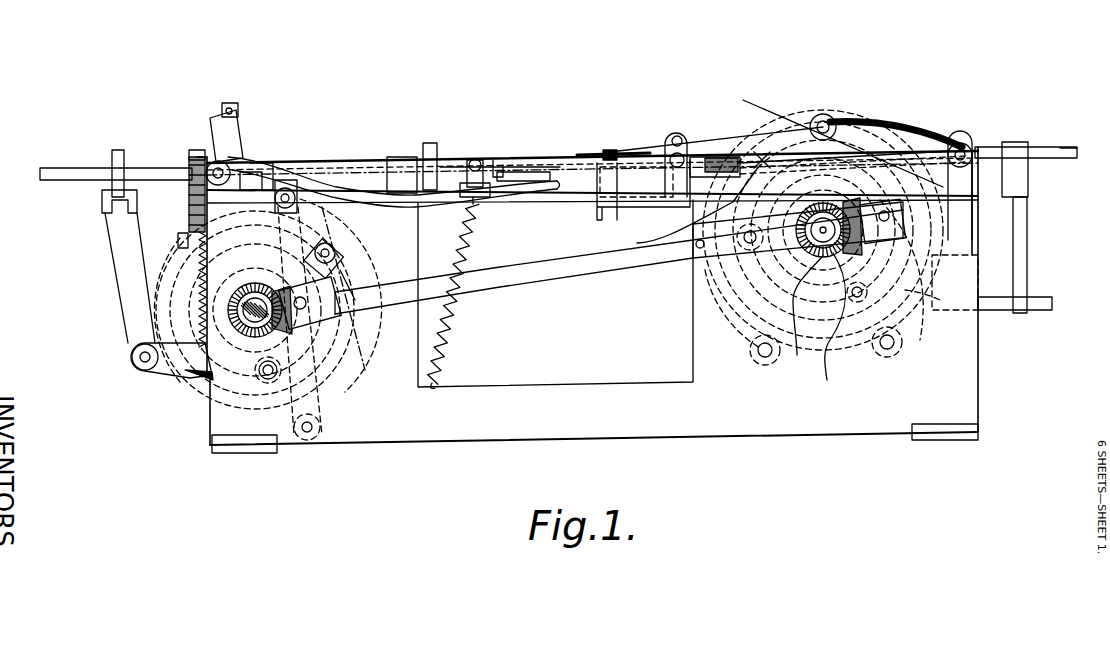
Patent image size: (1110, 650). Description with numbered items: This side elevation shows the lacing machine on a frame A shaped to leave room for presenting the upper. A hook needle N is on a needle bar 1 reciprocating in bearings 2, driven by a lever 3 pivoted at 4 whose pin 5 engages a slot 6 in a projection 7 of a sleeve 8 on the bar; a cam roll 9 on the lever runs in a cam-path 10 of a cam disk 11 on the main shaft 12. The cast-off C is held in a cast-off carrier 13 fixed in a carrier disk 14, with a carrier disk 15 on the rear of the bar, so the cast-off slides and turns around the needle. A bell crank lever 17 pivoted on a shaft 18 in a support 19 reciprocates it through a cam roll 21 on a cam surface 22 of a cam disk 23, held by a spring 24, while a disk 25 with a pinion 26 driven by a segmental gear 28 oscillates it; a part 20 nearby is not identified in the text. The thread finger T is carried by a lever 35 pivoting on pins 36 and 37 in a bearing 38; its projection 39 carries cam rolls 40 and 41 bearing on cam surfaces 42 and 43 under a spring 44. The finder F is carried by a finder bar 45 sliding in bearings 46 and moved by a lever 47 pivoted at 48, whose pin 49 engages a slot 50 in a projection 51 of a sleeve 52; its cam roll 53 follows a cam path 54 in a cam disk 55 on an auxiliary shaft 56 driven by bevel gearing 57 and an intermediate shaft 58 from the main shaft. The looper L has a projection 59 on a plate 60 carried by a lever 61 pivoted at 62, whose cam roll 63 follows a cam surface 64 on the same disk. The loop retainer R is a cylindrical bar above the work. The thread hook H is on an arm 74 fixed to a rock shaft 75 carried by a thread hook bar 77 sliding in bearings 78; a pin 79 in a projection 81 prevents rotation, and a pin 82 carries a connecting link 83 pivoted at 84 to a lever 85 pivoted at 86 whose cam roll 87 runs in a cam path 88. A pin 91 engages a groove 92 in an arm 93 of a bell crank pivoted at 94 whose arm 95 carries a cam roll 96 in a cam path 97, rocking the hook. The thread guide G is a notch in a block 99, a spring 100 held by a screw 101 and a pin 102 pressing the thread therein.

The frame A is at (592, 300).
The needle bar 1 is at (368, 176).
The bearings 2 is at (265, 186).
The lever 3 is at (292, 220).
The pivot 4 is at (314, 427).
The pin 5 is at (300, 200).
The slot 6 is at (306, 210).
The projection 7 is at (272, 185).
The sleeve 8 is at (296, 190).
The cam roll 9 is at (330, 330).
The cam-path 10 is at (250, 296).
The cam disk 11 is at (196, 250).
The main shaft 12 is at (252, 330).
The cast-off carrier 13 is at (445, 182).
The carrier disk 14 is at (430, 146).
The carrier disk 15 is at (118, 170).
The bell crank lever 17 is at (120, 312).
The shaft 18 is at (138, 362).
The support 19 is at (145, 372).
The bar 20 is at (94, 178).
The cam roll 21 is at (270, 384).
The cam surface 22 is at (221, 254).
The cam disk 23 is at (128, 283).
The spring 24 is at (180, 247).
The disk 25 is at (204, 158).
The pinion 26 is at (194, 158).
The segmental gear 28 is at (190, 185).
The thread finger carrying lever 35 is at (343, 182).
The pin 36 is at (236, 112).
The pin 37 is at (243, 160).
The bearing 38 is at (230, 170).
The projection 39 is at (345, 224).
The cam roll 40 is at (334, 266).
The cam roll 41 is at (334, 259).
The cam surface 42 is at (336, 322).
The cam surface 43 is at (225, 232).
The spring 44 is at (462, 262).
The finder bar 45 is at (1066, 156).
The bearings 46 is at (700, 155).
The lever 47 is at (756, 328).
The pivot 48 is at (765, 357).
The pin 49 is at (662, 244).
The slot 50 is at (712, 242).
The projection 51 is at (752, 155).
The sleeve 52 is at (762, 155).
The cam roll 53 is at (742, 264).
The cam path 54 is at (792, 192).
The cam disk 55 is at (745, 280).
The auxiliary shaft 56 is at (798, 355).
The bevel gearing 57 is at (828, 380).
The intermediate shaft 58 is at (539, 272).
The projection 59 is at (602, 160).
The plate 60 is at (603, 173).
The lever 61 is at (697, 150).
The pivot 62 is at (697, 177).
The cam roll 63 is at (835, 122).
The cam surface 64 is at (919, 275).
The arm 74 is at (650, 156).
The rock shaft 75 is at (677, 168).
The thread hook bar 77 is at (1003, 155).
The bearings 78 is at (817, 120).
The pin 79 is at (1027, 236).
The projection 81 is at (1044, 306).
The pin 82 is at (1016, 148).
The connecting link 83 is at (961, 143).
The pivot 84 is at (955, 185).
The lever 85 is at (902, 330).
The pivot 86 is at (887, 350).
The cam roll 87 is at (920, 226).
The cam path 88 is at (867, 165).
The pin 91 is at (764, 158).
The groove 92 is at (823, 114).
The arm 93 is at (895, 121).
The pivot 94 is at (953, 148).
The arm 95 is at (910, 214).
The cam roll 96 is at (855, 300).
The cam path 97 is at (851, 292).
The block 99 is at (643, 190).
The spring 100 is at (592, 157).
The screw 101 is at (647, 153).
The pin 102 is at (615, 150).
The cast-off C is at (505, 144).
The needle N is at (500, 148).
The finder F is at (601, 126).
The thread finger T is at (501, 201).
The thread guide G is at (622, 200).
The looper L is at (598, 107).
The loop retainer R is at (641, 111).
The thread hook H is at (622, 123).